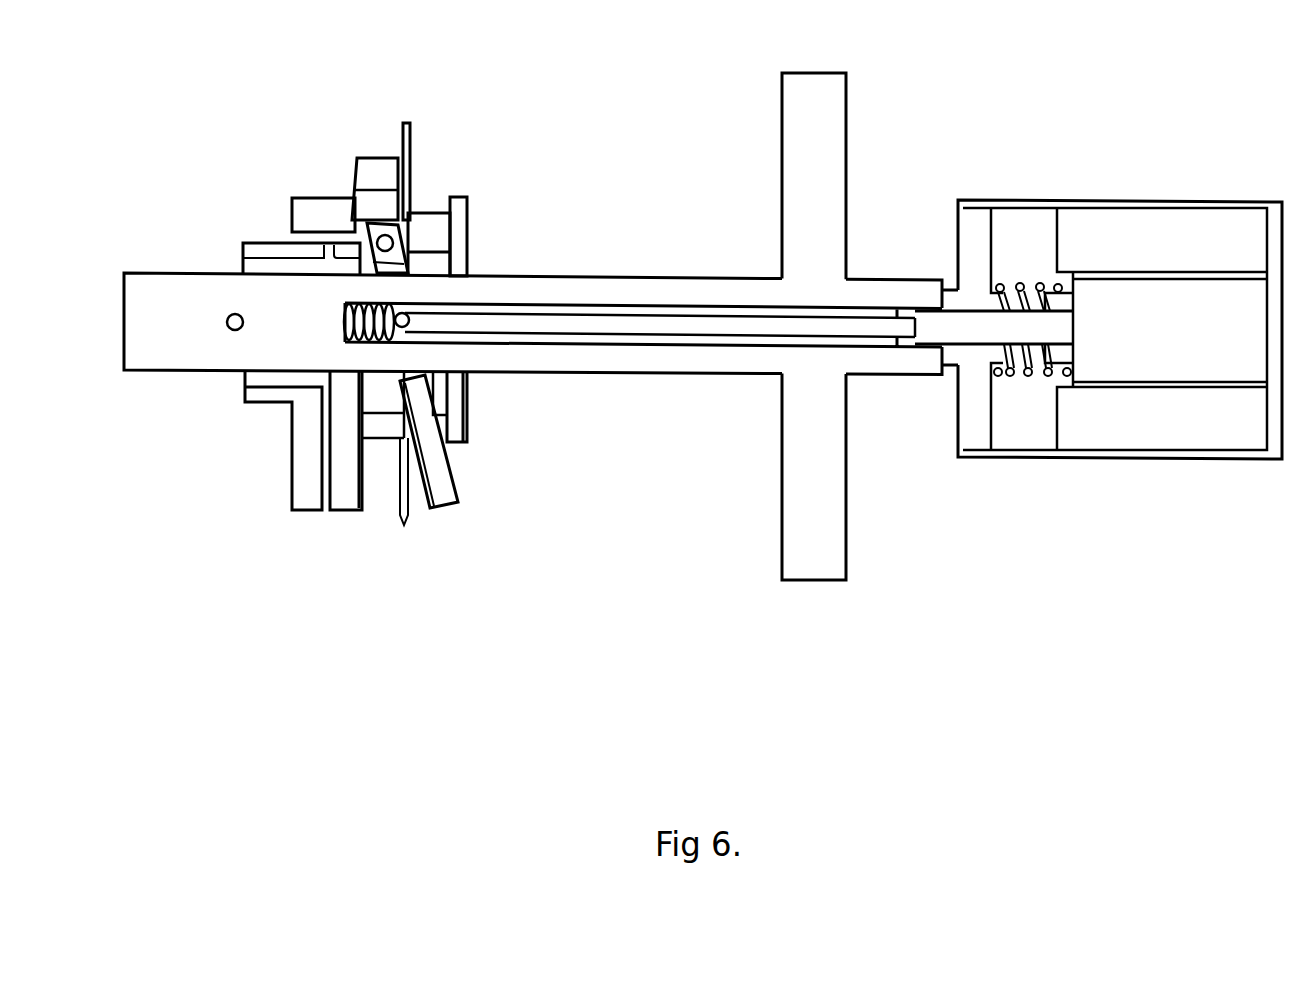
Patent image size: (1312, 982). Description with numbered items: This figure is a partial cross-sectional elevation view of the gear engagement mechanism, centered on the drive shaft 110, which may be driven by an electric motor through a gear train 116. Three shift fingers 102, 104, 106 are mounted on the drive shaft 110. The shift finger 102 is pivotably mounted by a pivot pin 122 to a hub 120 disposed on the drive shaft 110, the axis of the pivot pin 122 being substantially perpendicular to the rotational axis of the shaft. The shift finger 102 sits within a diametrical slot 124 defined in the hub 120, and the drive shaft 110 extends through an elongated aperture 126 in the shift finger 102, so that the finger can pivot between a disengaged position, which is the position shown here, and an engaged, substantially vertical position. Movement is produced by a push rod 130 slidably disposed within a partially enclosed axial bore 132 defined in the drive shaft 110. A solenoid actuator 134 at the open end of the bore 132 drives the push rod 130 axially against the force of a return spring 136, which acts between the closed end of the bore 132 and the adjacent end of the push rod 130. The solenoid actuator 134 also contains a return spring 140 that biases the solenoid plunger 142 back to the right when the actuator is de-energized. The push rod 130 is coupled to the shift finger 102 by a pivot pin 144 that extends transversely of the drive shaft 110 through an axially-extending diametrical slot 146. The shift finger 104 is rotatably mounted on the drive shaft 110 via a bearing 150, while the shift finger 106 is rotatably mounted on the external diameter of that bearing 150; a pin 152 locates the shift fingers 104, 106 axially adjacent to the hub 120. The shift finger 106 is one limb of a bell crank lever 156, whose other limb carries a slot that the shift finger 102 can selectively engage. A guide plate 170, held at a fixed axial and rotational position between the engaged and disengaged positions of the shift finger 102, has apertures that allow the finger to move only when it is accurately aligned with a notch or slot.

The shift finger 102 is at (433, 504).
The shift finger 104 is at (345, 490).
The shift finger 106 is at (300, 488).
The drive shaft 110 is at (167, 297).
The gear train 116 is at (795, 540).
The hub 120 is at (460, 207).
The pivot pin 122 is at (393, 240).
The diametrical slot 124 is at (430, 238).
The elongated aperture 126 is at (407, 270).
The push rod 130 is at (677, 325).
The axial bore 132 is at (732, 340).
The solenoid actuator 134 is at (1195, 218).
The return spring 136 is at (343, 345).
The return spring 140 is at (1012, 377).
The solenoid plunger 142 is at (1160, 357).
The pivot pin 144 is at (410, 325).
The diametrical slot 146 is at (405, 337).
The bearing 150 is at (257, 267).
The pin 152 is at (233, 333).
The bell crank lever 156 is at (367, 170).
The guide plate 170 is at (405, 527).